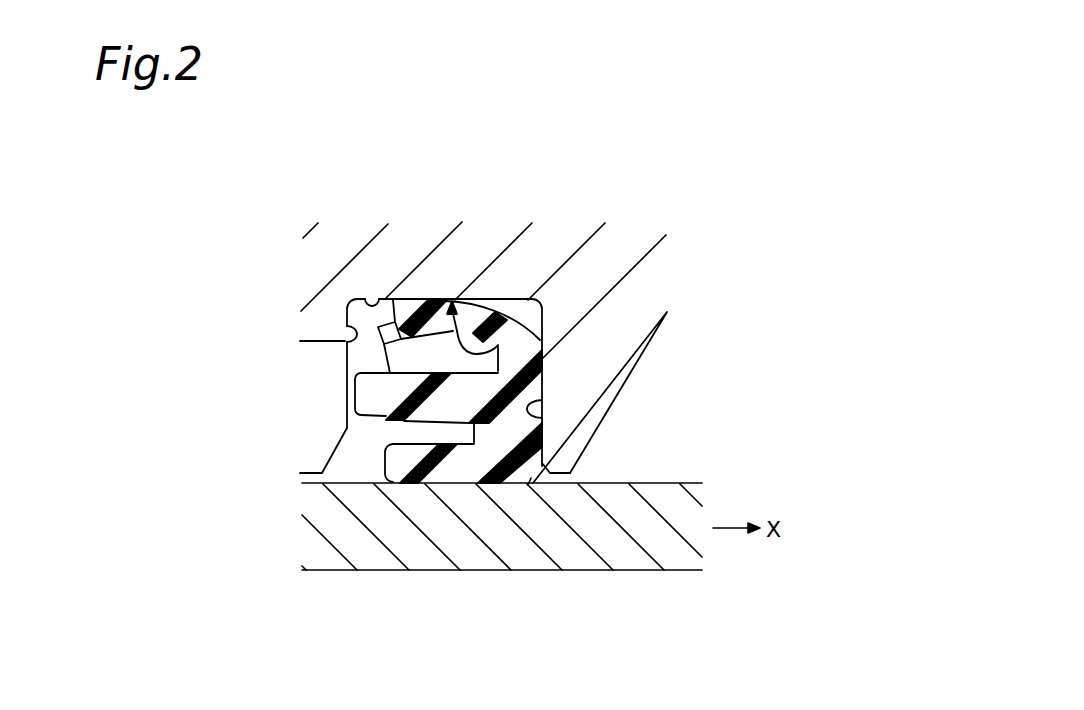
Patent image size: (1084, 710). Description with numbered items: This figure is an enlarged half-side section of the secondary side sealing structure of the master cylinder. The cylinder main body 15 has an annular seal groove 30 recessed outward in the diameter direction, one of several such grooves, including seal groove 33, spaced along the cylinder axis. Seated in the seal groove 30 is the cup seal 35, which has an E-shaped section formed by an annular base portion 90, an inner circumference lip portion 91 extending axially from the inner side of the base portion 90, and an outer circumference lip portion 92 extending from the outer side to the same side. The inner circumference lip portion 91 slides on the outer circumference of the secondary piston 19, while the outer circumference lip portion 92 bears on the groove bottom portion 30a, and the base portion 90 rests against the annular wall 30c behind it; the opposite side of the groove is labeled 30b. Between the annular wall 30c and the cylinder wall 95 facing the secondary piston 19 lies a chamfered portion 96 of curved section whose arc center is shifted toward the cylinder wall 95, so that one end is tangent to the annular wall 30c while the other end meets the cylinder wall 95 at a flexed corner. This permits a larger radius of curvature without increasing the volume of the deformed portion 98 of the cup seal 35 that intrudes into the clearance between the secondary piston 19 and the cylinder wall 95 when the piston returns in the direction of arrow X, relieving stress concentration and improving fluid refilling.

The cylinder main body 15 is at (650, 282).
The secondary piston 19 is at (527, 568).
The seal groove 30 is at (523, 300).
The groove bottom portion 30a is at (378, 298).
The seal projection 30b is at (355, 336).
The annular wall 30c is at (537, 418).
The seal groove 33 is at (365, 398).
The cup seal 35 is at (420, 486).
The base portion 90 is at (542, 383).
The inner circumference lip portion 91 is at (405, 468).
The outer circumference lip portion 92 is at (399, 300).
The cylinder wall 95 is at (562, 475).
The chamfered portion 96 is at (528, 485).
The deformed portion 98 is at (547, 475).